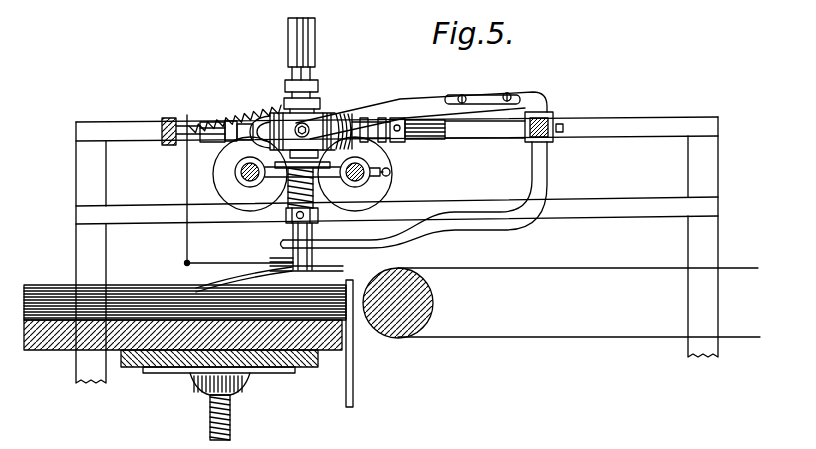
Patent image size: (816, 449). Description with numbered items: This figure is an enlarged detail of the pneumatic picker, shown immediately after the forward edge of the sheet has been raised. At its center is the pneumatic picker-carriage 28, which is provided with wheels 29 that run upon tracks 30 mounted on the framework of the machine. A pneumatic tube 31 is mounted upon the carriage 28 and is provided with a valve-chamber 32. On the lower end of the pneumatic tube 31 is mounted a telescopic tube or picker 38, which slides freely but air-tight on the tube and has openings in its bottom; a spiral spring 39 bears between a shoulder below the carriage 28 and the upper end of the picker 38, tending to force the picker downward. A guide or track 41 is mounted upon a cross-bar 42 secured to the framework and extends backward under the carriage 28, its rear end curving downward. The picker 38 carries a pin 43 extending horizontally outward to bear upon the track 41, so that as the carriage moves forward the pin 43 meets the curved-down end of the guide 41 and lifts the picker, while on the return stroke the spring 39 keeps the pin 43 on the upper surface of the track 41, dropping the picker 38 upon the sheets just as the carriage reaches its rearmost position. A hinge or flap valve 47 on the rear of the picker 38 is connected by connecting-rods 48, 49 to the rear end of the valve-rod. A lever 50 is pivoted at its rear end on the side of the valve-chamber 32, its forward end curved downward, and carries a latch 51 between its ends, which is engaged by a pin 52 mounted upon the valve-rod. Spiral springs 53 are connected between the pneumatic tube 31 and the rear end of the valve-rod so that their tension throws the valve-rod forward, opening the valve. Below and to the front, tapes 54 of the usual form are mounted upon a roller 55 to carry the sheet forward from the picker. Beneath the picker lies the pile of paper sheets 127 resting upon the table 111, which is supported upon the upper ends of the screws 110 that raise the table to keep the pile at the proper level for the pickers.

The pneumatic picker-carriage 28 is at (326, 140).
The wheels 29 is at (228, 166).
The tracks 30 is at (122, 130).
The pneumatic tube 31 is at (300, 72).
The valve-chamber 32 is at (248, 122).
The telescopic tube or picker 38 is at (314, 259).
The spiral spring 39 is at (315, 198).
The guide or track 41 is at (547, 170).
The cross-bar 42 is at (548, 118).
The pin 43 is at (290, 223).
The hinge or flap valve 47 is at (292, 260).
The connecting-rod 48 is at (216, 272).
The connecting-rod 49 is at (186, 241).
The lever 50 is at (417, 107).
The latch 51 is at (397, 118).
The pin 52 is at (440, 141).
The spiral springs 53 is at (262, 126).
The tapes 54 is at (628, 258).
The roller 55 is at (422, 302).
The screws 110 is at (210, 421).
The table 111 is at (53, 338).
The pile of paper sheets 127 is at (52, 285).